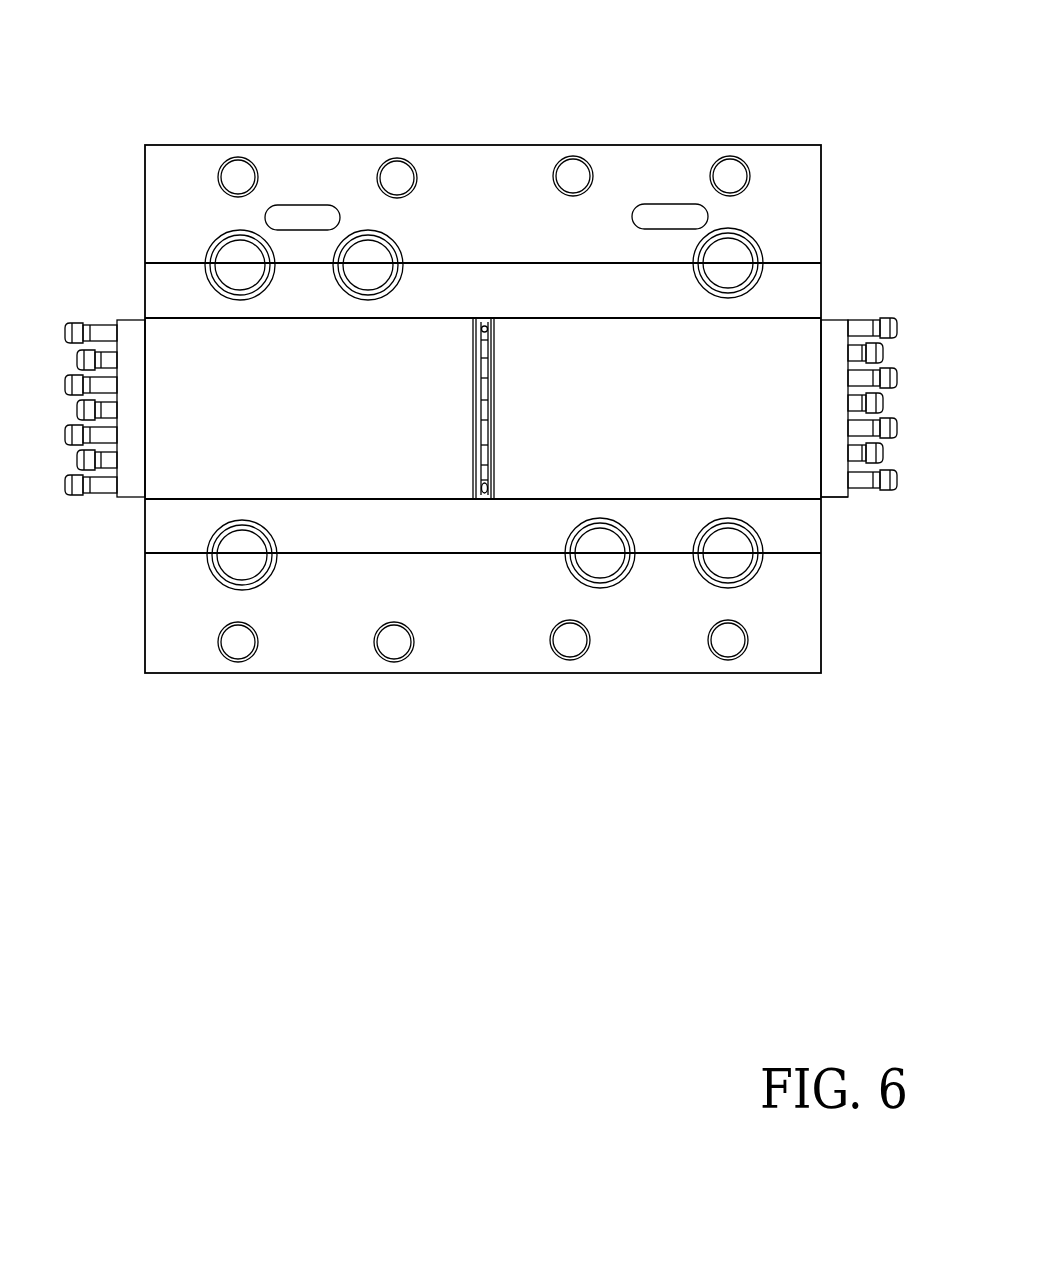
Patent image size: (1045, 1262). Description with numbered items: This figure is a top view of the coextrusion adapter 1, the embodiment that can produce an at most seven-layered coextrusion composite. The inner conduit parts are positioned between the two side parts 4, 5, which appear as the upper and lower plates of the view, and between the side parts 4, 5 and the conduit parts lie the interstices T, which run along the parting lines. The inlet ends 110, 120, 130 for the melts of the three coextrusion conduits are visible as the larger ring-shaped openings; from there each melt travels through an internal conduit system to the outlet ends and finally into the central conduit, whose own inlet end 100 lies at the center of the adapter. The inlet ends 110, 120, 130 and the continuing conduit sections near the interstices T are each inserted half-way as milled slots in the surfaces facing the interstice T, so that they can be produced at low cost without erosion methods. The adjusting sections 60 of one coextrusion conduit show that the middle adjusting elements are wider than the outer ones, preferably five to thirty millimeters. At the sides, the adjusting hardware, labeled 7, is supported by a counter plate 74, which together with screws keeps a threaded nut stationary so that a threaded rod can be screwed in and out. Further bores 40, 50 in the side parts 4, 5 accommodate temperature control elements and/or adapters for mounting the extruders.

The coextrusion adapter 1 is at (124, 120).
The side part 4 is at (302, 675).
The side part 5 is at (668, 146).
The connector 7 is at (104, 309).
The bore 40 is at (397, 662).
The bore 50 is at (400, 158).
The adjusting section 60 is at (487, 408).
The counter plate 74 is at (838, 500).
The inlet end 100 is at (485, 318).
The inlet end 110 is at (363, 238).
The inlet end 120 is at (218, 238).
The inlet end 130 is at (742, 233).
The interstice T is at (592, 263).